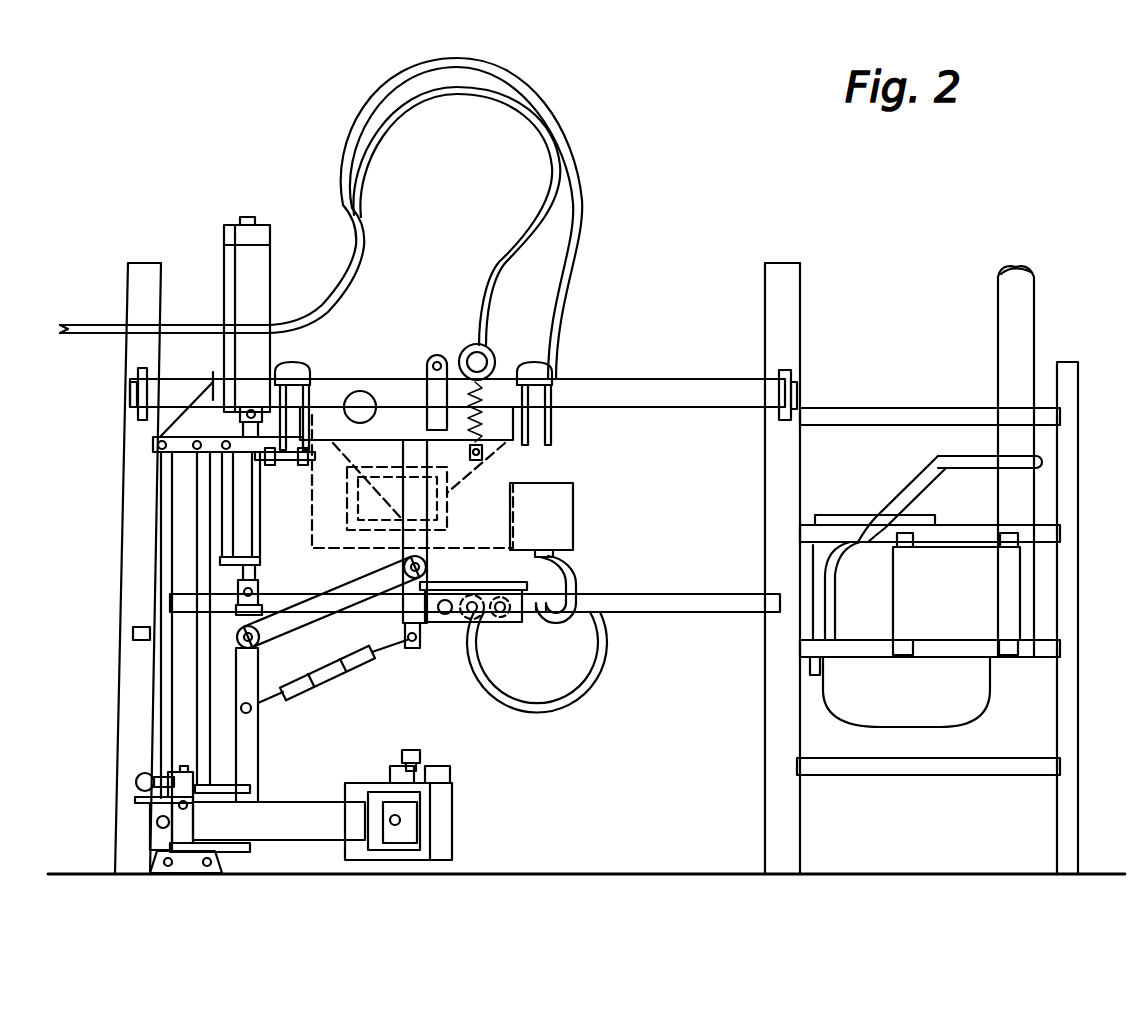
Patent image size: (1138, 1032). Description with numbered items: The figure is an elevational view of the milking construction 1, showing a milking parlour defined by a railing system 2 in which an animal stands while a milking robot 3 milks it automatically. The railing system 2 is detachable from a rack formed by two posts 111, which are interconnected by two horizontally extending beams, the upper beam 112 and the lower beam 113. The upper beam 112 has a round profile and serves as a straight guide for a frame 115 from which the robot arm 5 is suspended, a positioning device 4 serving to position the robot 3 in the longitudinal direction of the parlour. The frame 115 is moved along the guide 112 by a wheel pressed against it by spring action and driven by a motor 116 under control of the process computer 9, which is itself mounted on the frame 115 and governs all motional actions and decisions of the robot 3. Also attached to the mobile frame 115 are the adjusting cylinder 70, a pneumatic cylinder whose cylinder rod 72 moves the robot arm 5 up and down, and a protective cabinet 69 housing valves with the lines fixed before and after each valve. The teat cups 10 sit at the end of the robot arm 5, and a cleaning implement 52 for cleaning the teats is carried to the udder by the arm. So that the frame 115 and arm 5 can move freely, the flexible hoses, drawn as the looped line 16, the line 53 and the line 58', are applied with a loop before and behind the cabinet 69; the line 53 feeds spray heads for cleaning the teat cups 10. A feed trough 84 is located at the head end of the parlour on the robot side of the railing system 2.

The milking construction 1 is at (700, 280).
The railing system 2 is at (905, 412).
The milking robot 3 is at (395, 322).
The positioning device 4 is at (150, 446).
The robot arm 5 is at (285, 810).
The process computer 9 is at (320, 565).
The teat cups 10 is at (452, 775).
The hose 16 is at (582, 217).
The cleaning implement 52 is at (455, 583).
The line 53 is at (548, 705).
The line 58' is at (549, 609).
The protective cabinet 69 is at (575, 500).
The adjusting cylinder 70 is at (268, 275).
The cylinder rod 72 is at (255, 535).
The feed trough 84 is at (935, 730).
The posts 111 is at (135, 278).
The upper beam 112 is at (670, 380).
The beam 113 is at (672, 612).
The frame 115 is at (455, 492).
The motor 116 is at (468, 342).